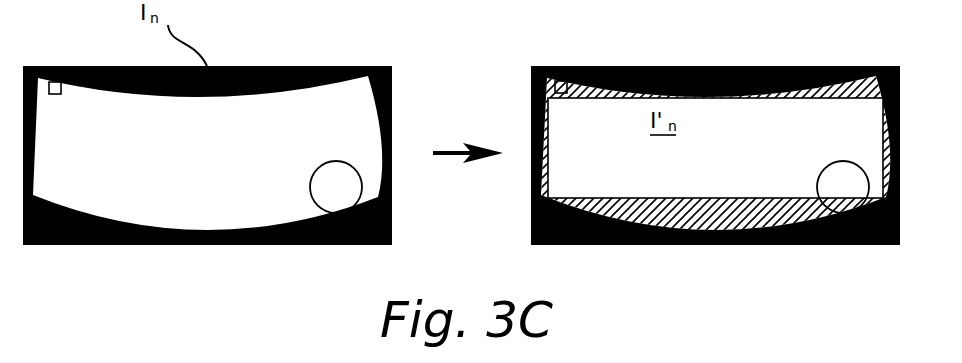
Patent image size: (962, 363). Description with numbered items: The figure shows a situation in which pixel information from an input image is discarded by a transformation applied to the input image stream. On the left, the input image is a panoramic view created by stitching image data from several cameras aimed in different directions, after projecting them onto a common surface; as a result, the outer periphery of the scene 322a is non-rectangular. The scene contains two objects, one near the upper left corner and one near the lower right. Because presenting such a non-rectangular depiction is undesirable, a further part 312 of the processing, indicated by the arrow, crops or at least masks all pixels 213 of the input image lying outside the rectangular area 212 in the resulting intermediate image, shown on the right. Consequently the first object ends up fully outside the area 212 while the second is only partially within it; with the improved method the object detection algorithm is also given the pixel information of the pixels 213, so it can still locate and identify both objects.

The scene 322a is at (238, 167).
The rectangular area 212 is at (673, 179).
The pixels 213 is at (773, 213).
The further part of the processing 312 is at (445, 157).